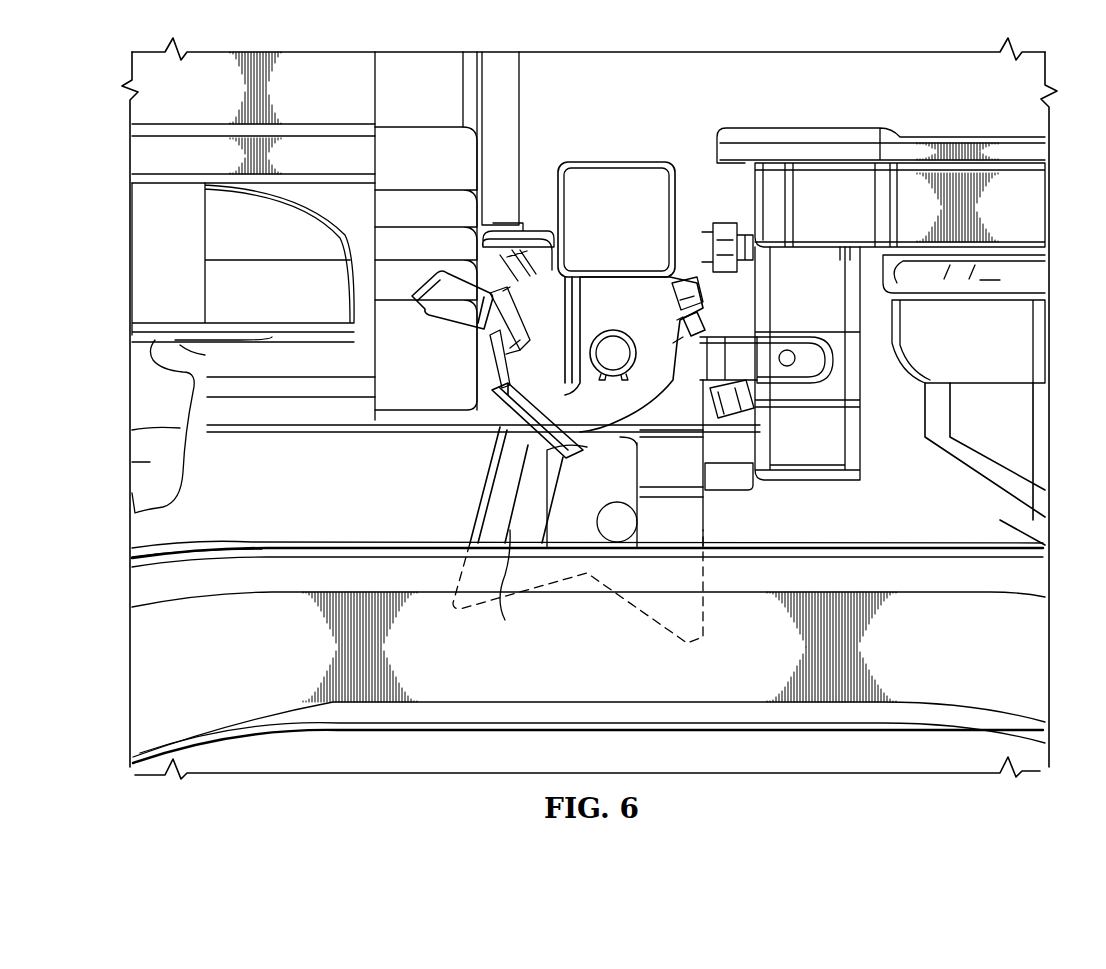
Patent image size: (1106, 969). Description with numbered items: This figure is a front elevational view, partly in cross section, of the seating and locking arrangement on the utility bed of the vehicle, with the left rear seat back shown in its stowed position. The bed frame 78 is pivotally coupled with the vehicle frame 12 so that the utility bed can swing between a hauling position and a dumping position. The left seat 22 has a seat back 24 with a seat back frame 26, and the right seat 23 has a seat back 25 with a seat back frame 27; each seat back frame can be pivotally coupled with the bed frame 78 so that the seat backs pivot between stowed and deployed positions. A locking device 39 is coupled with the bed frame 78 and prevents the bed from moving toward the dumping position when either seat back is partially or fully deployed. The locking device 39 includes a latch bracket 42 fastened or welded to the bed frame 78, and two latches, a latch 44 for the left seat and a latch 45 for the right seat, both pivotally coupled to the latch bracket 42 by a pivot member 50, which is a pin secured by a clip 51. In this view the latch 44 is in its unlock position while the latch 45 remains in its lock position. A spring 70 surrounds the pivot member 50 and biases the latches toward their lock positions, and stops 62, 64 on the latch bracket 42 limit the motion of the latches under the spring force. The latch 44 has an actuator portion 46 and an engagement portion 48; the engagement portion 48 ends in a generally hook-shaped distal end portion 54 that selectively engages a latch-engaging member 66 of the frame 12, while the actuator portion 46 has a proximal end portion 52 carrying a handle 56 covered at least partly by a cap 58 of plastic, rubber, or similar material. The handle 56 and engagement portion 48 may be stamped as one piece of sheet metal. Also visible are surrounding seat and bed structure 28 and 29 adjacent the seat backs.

The frame 12 is at (400, 720).
The left seat 22 is at (960, 110).
The right seat 23 is at (535, 85).
The seat back 24 is at (915, 133).
The seat back 25 is at (521, 137).
The seat back frame 26 is at (855, 280).
The seat back frame 27 is at (394, 70).
The bracket 28 is at (840, 337).
The panel rib 29 is at (396, 106).
The locking device 39 is at (374, 466).
The latch bracket 42 is at (598, 300).
The latch 44 is at (462, 492).
The latch 45 is at (714, 512).
The actuator portion 46 is at (766, 395).
The engagement portion 48 is at (468, 531).
The pivot member 50 is at (620, 348).
The clip 51 is at (607, 378).
The proximal end portion 52 is at (801, 323).
The distal end portion 54 is at (505, 618).
The handle 56 is at (786, 349).
The cap 58 is at (840, 358).
The stop 62 is at (696, 291).
The stop 64 is at (527, 286).
The latch-engaging member 66 is at (612, 506).
The spring 70 is at (700, 345).
The bed frame 78 is at (618, 162).